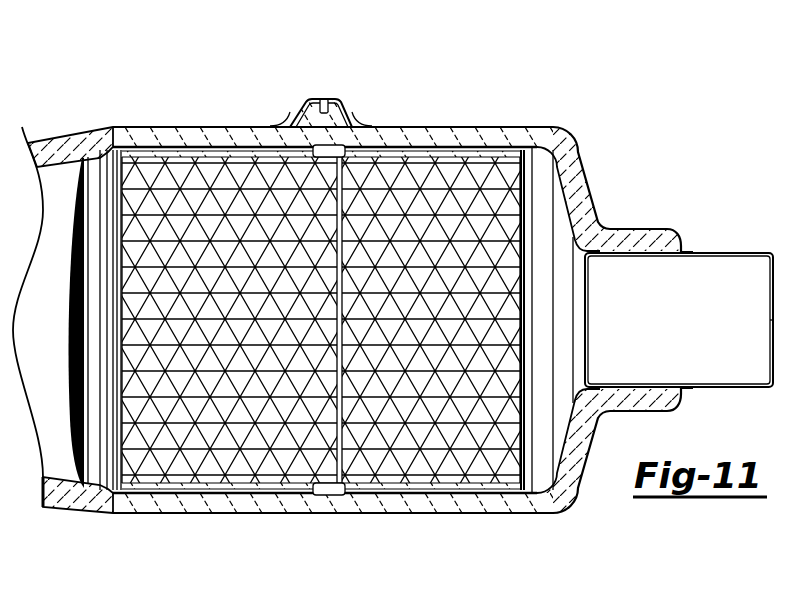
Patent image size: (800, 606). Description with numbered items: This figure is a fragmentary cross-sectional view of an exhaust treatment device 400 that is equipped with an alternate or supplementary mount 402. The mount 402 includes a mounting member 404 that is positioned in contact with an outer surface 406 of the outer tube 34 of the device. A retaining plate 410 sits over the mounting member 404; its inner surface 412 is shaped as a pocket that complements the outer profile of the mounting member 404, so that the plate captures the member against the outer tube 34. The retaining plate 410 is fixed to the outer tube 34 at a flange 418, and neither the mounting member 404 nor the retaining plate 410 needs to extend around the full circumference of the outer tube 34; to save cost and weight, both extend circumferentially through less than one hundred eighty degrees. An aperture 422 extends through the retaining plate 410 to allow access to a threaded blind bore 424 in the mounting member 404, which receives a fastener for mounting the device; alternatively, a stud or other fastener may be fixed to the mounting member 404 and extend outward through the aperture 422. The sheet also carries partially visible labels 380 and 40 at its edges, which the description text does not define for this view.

The outer tube 34 is at (153, 127).
The exhaust treatment device 400 is at (448, 122).
The mount 402 is at (355, 98).
The mounting member 404 is at (300, 112).
The outer surface 406 is at (200, 127).
The retaining plate 410 is at (292, 120).
The inner surface 412 is at (350, 150).
The flange 418 is at (272, 122).
The aperture 422 is at (322, 97).
The threaded blind bore 424 is at (329, 97).
The upstream component 380 is at (455, 4).
The downstream component 40 is at (793, 174).